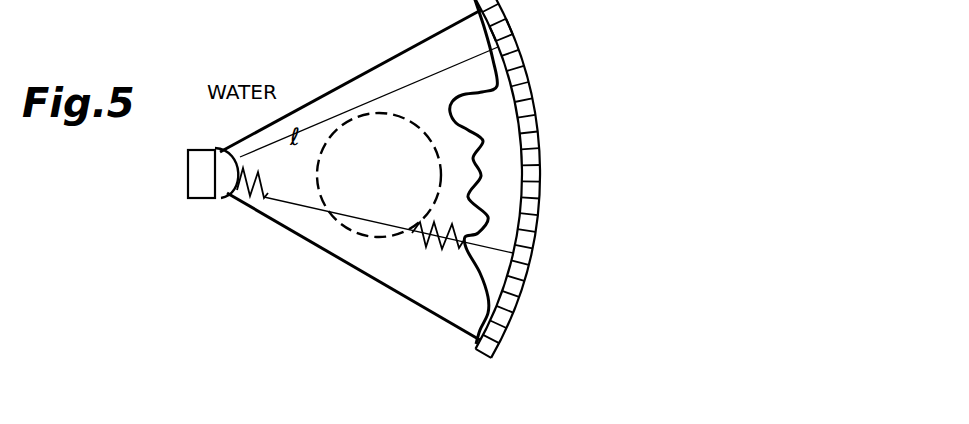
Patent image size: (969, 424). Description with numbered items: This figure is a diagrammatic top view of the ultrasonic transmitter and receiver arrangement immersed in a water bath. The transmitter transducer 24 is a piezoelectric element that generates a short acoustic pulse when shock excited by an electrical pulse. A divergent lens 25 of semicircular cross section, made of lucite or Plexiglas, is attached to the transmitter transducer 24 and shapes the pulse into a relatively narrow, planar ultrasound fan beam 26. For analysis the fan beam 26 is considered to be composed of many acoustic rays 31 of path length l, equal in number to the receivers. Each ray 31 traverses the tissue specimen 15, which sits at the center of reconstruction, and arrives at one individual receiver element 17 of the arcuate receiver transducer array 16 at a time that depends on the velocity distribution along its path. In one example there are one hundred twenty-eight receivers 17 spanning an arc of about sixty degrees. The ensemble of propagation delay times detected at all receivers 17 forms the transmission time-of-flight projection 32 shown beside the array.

The tissue specimen 15 is at (379, 175).
The arcuate receiver transducer array 16 is at (508, 373).
The individual receiver element 17 is at (505, 32).
The transmitter transducer 24 is at (195, 180).
The divergent lens 25 is at (227, 163).
The ultrasound fan beam 26 is at (377, 282).
The acoustic ray 31 is at (306, 208).
The transmission time-of-flight projection 32 is at (497, 90).